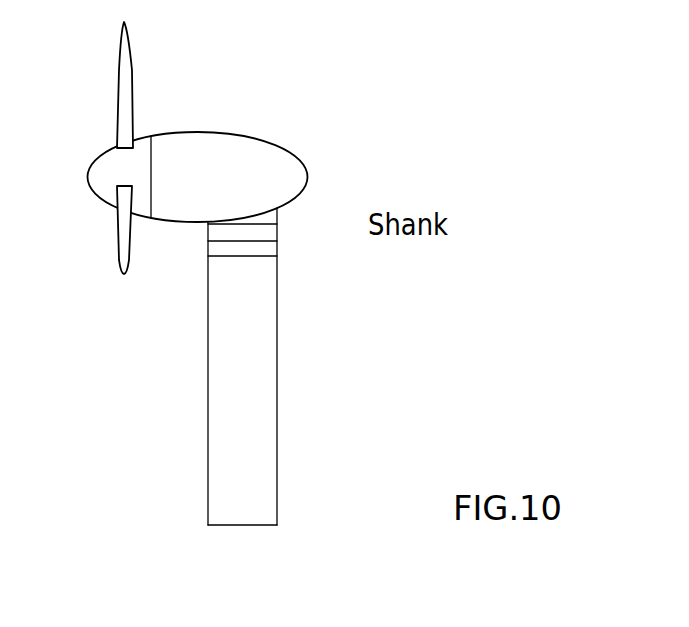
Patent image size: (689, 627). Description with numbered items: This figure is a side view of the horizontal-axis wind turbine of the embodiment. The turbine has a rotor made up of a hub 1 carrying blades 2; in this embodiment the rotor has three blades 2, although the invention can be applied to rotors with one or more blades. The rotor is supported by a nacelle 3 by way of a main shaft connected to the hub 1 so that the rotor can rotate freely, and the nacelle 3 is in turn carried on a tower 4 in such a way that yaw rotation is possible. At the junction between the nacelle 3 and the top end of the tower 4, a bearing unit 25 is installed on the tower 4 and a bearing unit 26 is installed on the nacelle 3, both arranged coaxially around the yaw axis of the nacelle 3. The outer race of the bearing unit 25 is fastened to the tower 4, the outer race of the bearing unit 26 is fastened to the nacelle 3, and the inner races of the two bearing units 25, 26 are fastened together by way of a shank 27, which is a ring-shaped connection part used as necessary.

The hub 1 is at (95, 177).
The blades 2 is at (125, 72).
The nacelle 3 is at (197, 148).
The tower 4 is at (216, 347).
The bearing unit 25 is at (270, 250).
The bearing unit 26 is at (268, 218).
The shank 27 is at (268, 234).